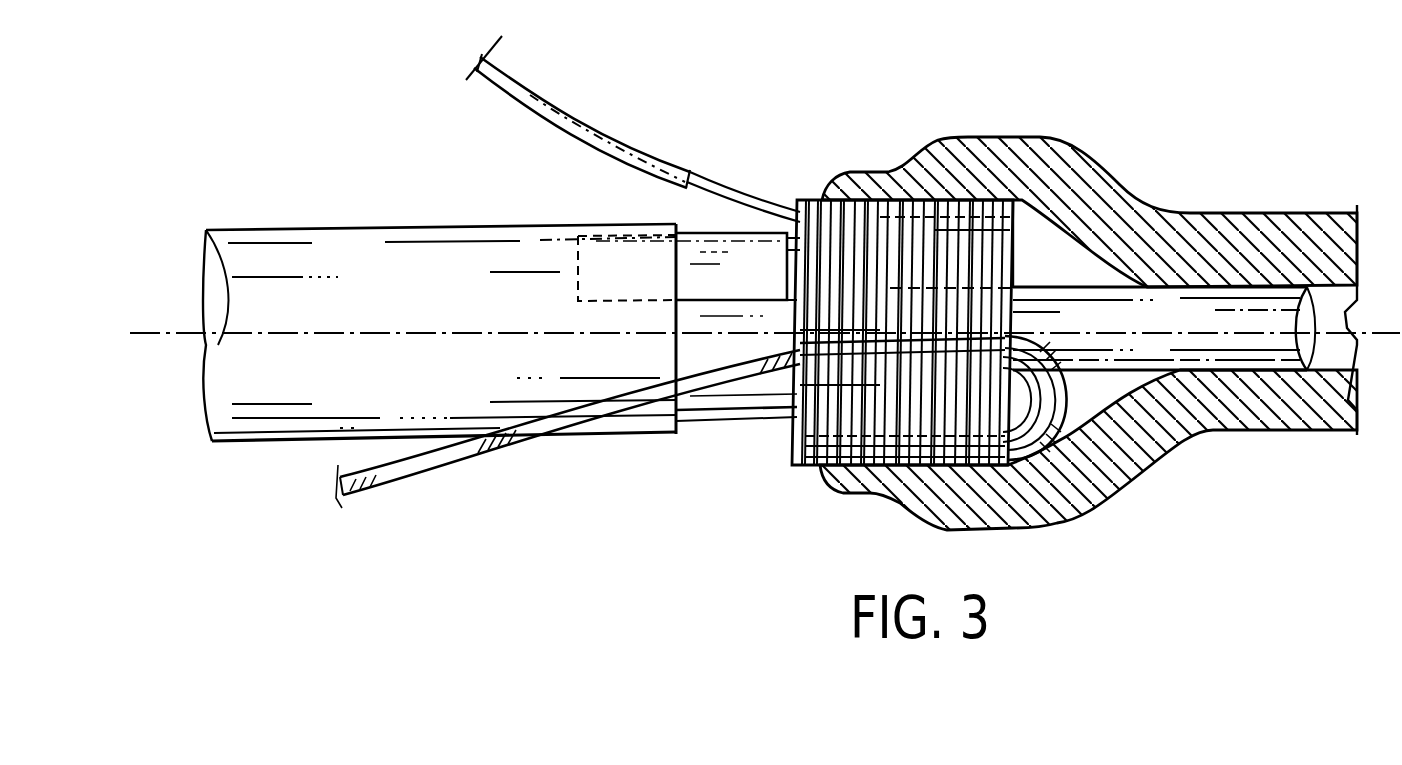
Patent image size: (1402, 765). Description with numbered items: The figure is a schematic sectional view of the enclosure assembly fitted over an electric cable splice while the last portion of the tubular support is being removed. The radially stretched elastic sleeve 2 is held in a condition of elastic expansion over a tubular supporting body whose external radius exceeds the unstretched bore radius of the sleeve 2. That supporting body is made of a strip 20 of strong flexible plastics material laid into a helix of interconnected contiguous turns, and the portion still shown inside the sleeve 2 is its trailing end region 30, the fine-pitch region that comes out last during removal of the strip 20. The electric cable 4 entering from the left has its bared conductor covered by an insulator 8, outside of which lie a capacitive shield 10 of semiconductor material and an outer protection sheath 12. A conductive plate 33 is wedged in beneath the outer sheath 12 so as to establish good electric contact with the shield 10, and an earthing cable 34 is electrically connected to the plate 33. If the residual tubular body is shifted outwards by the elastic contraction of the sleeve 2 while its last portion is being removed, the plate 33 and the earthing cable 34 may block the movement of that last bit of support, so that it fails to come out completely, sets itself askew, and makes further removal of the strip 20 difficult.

The elastic sleeve 2 is at (1050, 485).
The electric cable 4 is at (214, 352).
The insulator 8 is at (1178, 312).
The capacitive shield 10 is at (750, 400).
The outer protection sheath 12 is at (340, 262).
The strip 20 is at (470, 452).
The trailing end region 30 is at (806, 470).
The conductive plate 33 is at (718, 246).
The earthing cable 34 is at (626, 140).